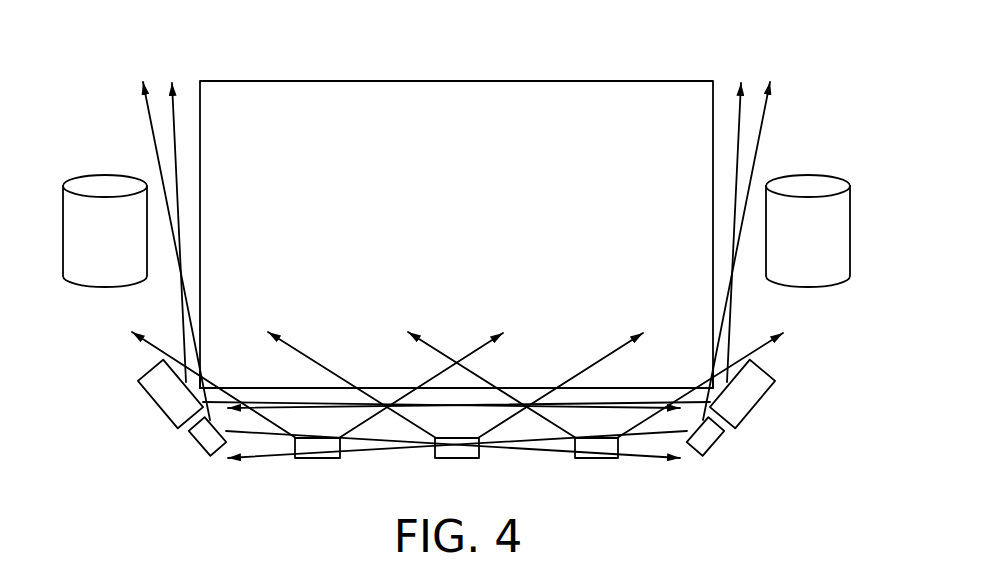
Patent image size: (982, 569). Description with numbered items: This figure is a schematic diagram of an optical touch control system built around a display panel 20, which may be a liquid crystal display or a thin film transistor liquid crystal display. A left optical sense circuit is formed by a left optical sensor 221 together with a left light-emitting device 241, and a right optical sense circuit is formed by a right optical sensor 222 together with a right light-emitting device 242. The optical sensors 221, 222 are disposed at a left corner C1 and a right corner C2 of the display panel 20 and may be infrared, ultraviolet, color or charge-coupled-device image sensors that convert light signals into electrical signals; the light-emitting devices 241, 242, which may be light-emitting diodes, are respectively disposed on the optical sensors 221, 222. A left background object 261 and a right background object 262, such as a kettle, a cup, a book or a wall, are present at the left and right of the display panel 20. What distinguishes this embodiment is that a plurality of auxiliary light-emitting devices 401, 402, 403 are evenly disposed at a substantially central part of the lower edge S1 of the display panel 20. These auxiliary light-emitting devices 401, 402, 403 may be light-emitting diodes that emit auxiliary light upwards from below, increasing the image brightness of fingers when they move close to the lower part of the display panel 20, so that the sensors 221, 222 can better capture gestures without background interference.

The display panel 20 is at (457, 80).
The left optical sensor 221 is at (147, 366).
The right optical sensor 222 is at (770, 367).
The left light-emitting device 241 is at (198, 449).
The right light-emitting device 242 is at (718, 445).
The left background object 261 is at (105, 184).
The right background object 262 is at (808, 184).
The auxiliary light-emitting device 401 is at (315, 458).
The auxiliary light-emitting device 402 is at (457, 458).
The auxiliary light-emitting device 403 is at (598, 458).
The left corner C1 is at (224, 369).
The right corner C2 is at (689, 369).
The lower edge S1 is at (284, 388).